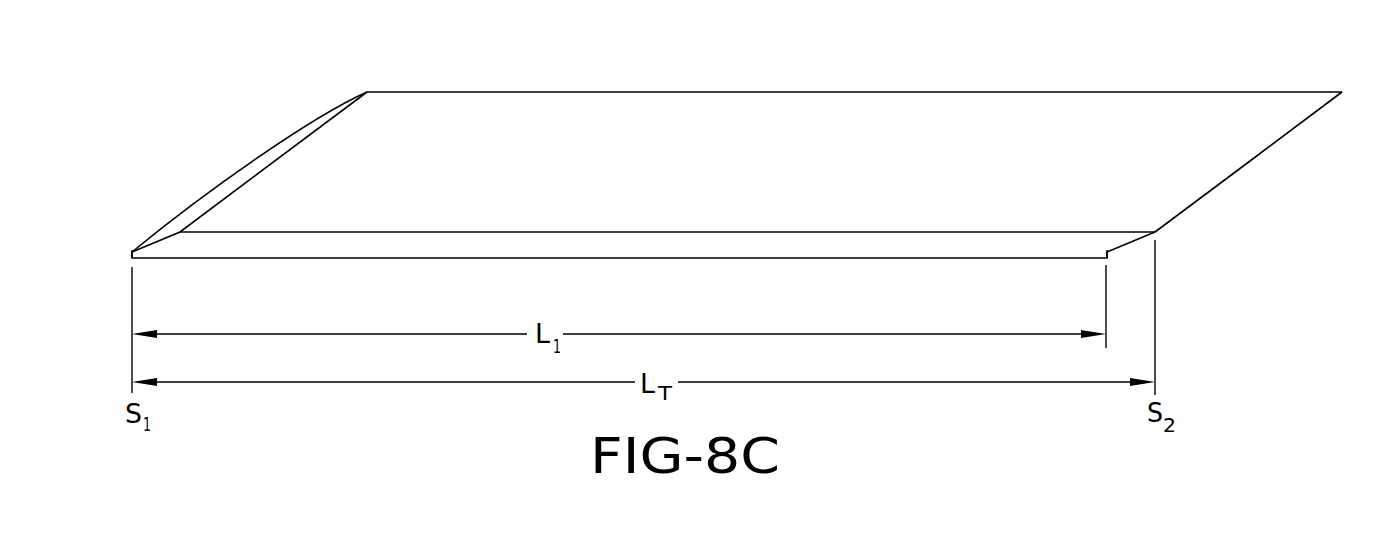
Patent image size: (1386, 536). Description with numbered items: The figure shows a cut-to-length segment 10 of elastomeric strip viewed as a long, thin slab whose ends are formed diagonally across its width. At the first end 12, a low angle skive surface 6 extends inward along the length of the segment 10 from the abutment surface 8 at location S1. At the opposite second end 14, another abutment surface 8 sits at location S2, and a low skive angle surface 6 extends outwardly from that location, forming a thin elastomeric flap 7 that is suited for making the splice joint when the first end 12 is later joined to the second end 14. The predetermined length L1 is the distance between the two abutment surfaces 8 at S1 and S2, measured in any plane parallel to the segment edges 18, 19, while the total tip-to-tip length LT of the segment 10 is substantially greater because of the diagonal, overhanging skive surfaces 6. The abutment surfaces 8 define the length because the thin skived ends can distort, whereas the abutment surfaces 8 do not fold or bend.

The segment 10 is at (306, 55).
The first end 12 is at (280, 128).
The low angle skive surface 6 is at (226, 186).
The abutment surface 8 is at (131, 257).
The segment edge 18 is at (854, 231).
The segment edge 19 is at (988, 91).
The elastomeric flap 7 is at (1246, 149).
The second end 14 is at (1204, 185).